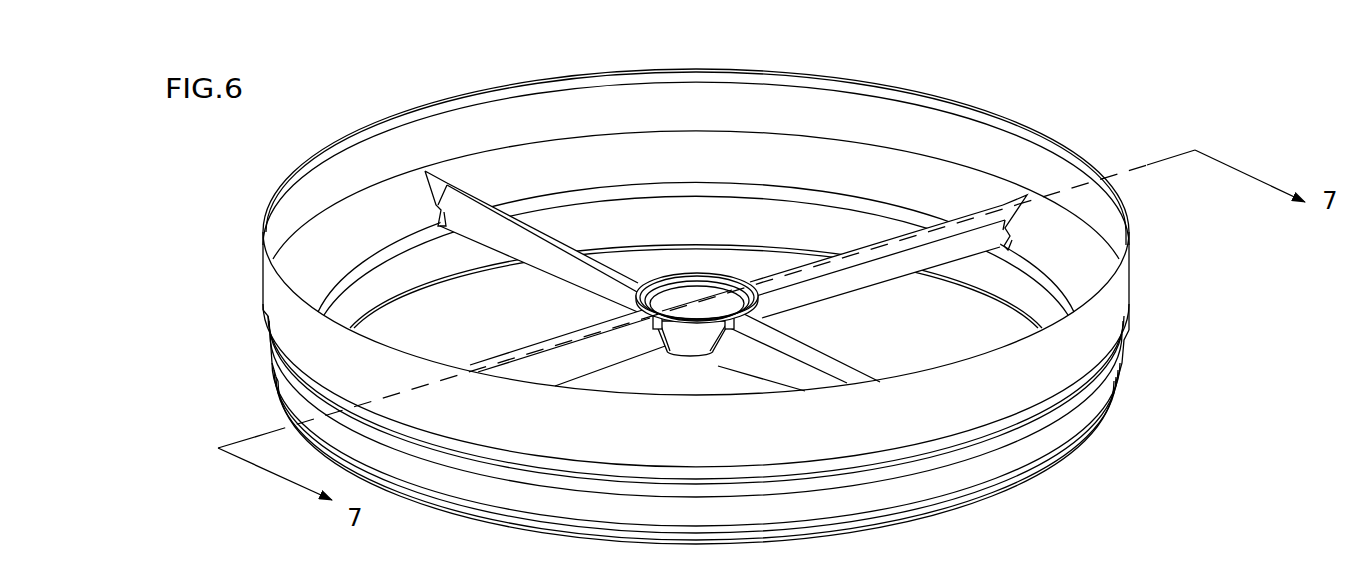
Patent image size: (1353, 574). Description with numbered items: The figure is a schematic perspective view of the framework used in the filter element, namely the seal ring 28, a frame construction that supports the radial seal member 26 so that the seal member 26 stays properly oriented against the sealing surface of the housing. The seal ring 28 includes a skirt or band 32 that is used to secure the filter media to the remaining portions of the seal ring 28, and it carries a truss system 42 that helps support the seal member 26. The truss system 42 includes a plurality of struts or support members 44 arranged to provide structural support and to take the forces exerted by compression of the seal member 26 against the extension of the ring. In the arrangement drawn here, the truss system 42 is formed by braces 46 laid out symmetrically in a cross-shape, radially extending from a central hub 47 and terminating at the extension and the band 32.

The seal ring 28 is at (738, 291).
The band 32 is at (696, 205).
The radial seal member 26 is at (1120, 363).
The truss system 42 is at (726, 244).
The support members 44 is at (543, 271).
The braces 46 is at (730, 357).
The hub 47 is at (695, 277).